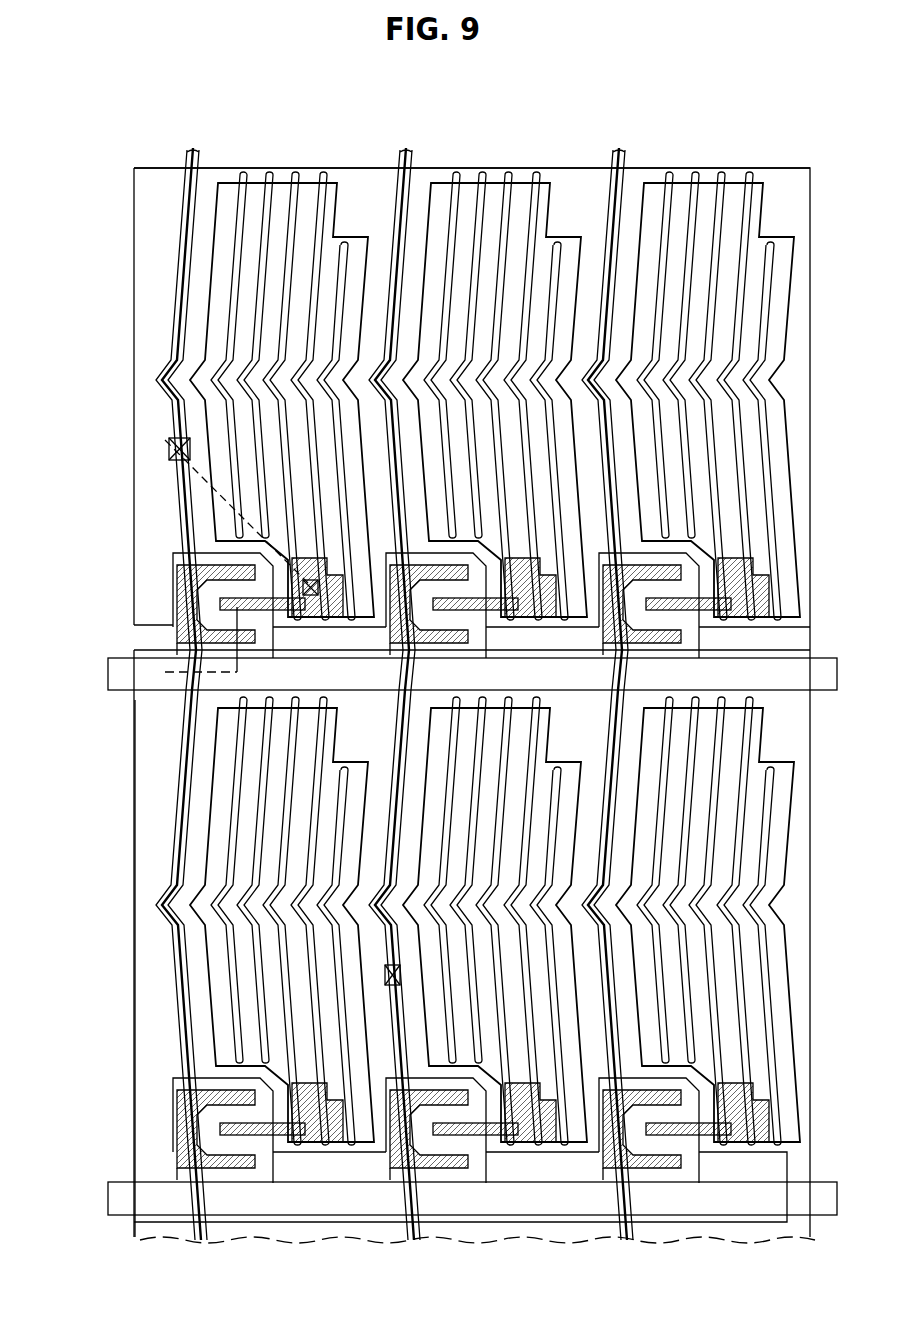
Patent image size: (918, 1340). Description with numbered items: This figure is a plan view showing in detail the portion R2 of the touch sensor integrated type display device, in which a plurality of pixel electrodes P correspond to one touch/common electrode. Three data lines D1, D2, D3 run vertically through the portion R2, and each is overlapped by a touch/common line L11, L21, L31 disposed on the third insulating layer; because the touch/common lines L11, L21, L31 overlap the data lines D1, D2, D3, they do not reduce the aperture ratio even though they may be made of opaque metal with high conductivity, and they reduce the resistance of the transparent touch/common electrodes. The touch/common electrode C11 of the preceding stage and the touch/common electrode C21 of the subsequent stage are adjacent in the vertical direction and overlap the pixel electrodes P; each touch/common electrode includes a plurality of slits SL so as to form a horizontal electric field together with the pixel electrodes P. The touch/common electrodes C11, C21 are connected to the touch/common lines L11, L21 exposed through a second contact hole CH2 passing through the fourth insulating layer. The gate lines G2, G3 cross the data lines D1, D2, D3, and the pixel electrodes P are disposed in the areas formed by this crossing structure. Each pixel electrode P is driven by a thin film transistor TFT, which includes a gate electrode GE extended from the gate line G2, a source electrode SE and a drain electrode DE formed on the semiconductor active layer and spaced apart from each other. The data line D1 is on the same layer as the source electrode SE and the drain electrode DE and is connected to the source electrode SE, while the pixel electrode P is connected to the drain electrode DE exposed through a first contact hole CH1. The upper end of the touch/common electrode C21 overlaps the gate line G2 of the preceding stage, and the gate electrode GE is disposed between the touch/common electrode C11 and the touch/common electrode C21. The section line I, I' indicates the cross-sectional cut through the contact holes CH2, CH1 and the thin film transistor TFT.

The portion R2 is at (100, 184).
The data line D1 is at (186, 170).
The data line D2 is at (399, 170).
The data line D3 is at (612, 170).
The touch/common line L11 is at (194, 155).
The touch/common line L21 is at (407, 155).
The touch/common line L31 is at (620, 155).
The pixel electrode P is at (292, 183).
The slit SL is at (323, 203).
The touch/common electrode C11 is at (134, 285).
The touch/common electrode C21 is at (134, 790).
The first contact hole CH1 is at (303, 583).
The second contact hole CH2 is at (169, 449).
The thin film transistor TFT is at (399, 869).
The drain electrode DE is at (300, 598).
The gate electrode GE is at (232, 604).
The source electrode SE is at (215, 636).
The gate line G2 is at (108, 675).
The gate line G3 is at (108, 1198).
The section line I is at (193, 648).
The section line I' is at (225, 502).